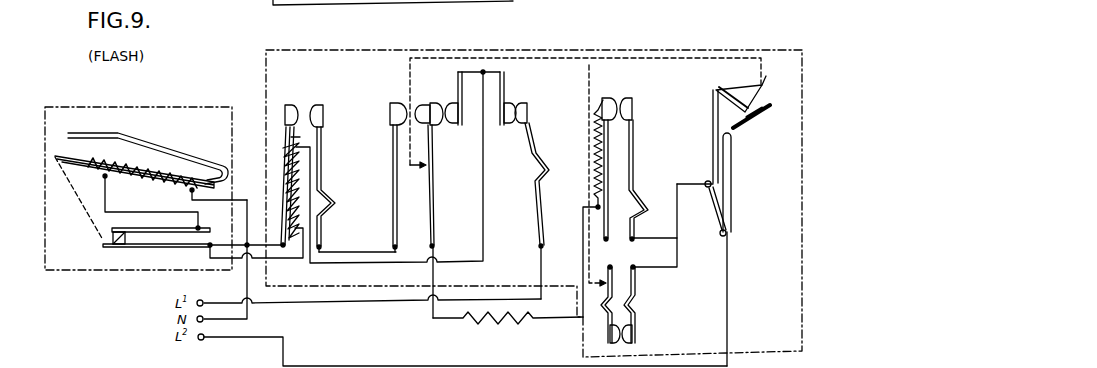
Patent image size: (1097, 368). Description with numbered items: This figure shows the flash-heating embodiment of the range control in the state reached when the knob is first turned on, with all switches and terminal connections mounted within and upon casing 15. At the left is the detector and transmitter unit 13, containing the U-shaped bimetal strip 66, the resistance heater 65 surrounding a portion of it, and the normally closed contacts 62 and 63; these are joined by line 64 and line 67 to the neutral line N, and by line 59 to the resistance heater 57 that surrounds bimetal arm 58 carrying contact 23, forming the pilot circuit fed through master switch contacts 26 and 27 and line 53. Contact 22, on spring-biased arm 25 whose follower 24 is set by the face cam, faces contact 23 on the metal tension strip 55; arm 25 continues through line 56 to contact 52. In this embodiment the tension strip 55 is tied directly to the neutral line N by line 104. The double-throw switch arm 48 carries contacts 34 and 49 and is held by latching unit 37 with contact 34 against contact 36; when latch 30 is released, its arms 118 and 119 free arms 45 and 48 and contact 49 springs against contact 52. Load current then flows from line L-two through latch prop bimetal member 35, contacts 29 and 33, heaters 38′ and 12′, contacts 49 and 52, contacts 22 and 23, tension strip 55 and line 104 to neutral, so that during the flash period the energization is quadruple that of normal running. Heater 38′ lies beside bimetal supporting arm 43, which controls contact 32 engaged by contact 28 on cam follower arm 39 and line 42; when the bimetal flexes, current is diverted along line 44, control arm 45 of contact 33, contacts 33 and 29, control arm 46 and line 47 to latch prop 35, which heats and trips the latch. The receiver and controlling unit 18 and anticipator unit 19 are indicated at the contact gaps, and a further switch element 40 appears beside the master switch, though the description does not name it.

The detector and transmitter unit 13 is at (201, 107).
The U-shaped bimetal strip 66 is at (175, 152).
The line 64 is at (121, 211).
The resistance heater 65 is at (186, 191).
The contact 63 is at (111, 237).
The contact 62 is at (108, 248).
The line 67 is at (239, 198).
The metal tension strip 55 is at (279, 150).
The contact 23 is at (291, 104).
The receiver and controlling unit 18 is at (306, 100).
The contact 22 is at (322, 105).
The bimetal arm 58 is at (298, 137).
The arm 25 is at (313, 161).
The resistance heater 57 is at (293, 183).
The follower 24 is at (336, 205).
The line 56 is at (366, 252).
The line 59 is at (292, 259).
The line 104 is at (247, 289).
The contact 52 is at (393, 103).
The contact 49 is at (423, 104).
The contact 34 is at (438, 103).
The contact 36 is at (455, 125).
The line 53 is at (488, 70).
The casing 15 is at (543, 50).
The switch contact 26 is at (520, 102).
The contact 27 is at (503, 125).
The double-throw switch arm 48 is at (433, 207).
The contact blade 40 is at (542, 218).
The heater 38′ is at (594, 158).
The contact 32 is at (606, 99).
The anticipator unit 19 is at (617, 99).
The contact 28 is at (630, 107).
The cam follower arm 39 is at (635, 138).
The bimetal supporting arm 43 is at (615, 185).
The latching unit 37 is at (709, 94).
The arm 118 is at (739, 89).
The arm 119 is at (765, 81).
The latch 30 is at (793, 89).
The latch prop bimetal member 35 is at (716, 138).
The line 47 is at (678, 216).
The line 42 is at (708, 241).
The line 44 is at (610, 262).
The control arm 45 is at (606, 310).
The control arm 46 is at (636, 298).
The contact 33 is at (612, 343).
The contact 29 is at (634, 340).
The surface heater unit 12′ is at (512, 327).